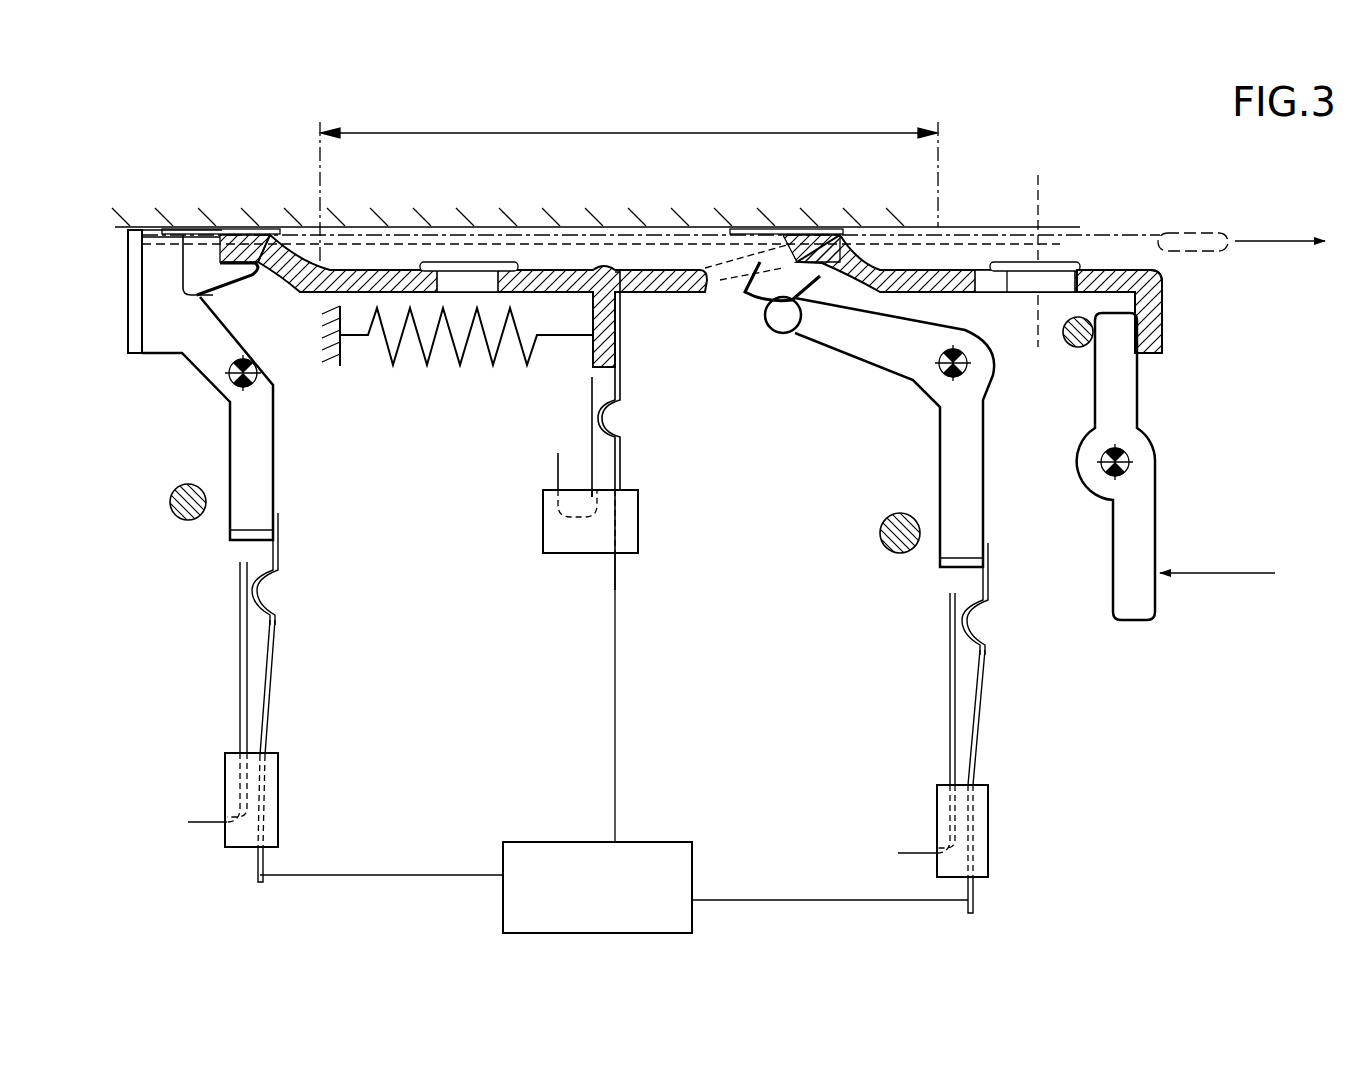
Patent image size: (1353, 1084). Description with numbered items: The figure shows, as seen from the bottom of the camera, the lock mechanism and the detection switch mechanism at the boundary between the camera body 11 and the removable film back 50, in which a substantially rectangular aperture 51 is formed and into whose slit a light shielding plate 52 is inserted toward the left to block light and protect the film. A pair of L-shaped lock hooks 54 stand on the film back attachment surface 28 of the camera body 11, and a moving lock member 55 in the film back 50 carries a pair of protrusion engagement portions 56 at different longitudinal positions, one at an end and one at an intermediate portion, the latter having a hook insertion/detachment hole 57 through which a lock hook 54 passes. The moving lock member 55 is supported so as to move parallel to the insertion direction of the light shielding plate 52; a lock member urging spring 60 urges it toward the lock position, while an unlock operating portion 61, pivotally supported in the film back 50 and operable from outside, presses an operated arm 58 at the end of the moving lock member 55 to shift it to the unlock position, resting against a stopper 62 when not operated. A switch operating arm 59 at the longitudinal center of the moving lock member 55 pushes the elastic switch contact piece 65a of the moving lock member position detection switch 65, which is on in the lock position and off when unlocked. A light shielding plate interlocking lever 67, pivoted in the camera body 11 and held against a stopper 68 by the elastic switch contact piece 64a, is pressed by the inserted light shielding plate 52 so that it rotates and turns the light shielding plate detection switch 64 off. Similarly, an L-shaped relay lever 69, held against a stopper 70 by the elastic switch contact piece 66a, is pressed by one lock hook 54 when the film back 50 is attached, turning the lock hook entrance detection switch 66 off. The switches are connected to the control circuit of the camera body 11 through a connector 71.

The camera body 11 is at (140, 186).
The film back attachment surface 28 is at (358, 230).
The film back 50 is at (1095, 778).
The aperture 51 is at (629, 183).
The light shielding plate 52 is at (1070, 235).
The lock hook 54 is at (245, 300).
The moving lock member 55 is at (657, 298).
The protrusion engagement portion 56 is at (238, 250).
The hook insertion/detachment hole 57 is at (713, 288).
The operated arm 58 is at (1163, 316).
The switch operating arm 59 is at (590, 358).
The lock member urging spring 60 is at (485, 348).
The unlock operating portion 61 is at (1150, 520).
The stopper 62 is at (1070, 348).
The light shielding plate detection switch 64 is at (277, 689).
The elastic switch contact piece 64a is at (278, 565).
The moving lock member position detection switch 65 is at (630, 455).
The elastic switch contact piece 65a is at (648, 370).
The lock hook entrance detection switch 66 is at (982, 736).
The elastic switch contact piece 66a is at (988, 594).
The light shielding plate interlocking lever 67 is at (268, 497).
The stopper 68 is at (170, 500).
The relay lever 69 is at (985, 466).
The stopper 70 is at (880, 535).
The connector 71 is at (660, 842).